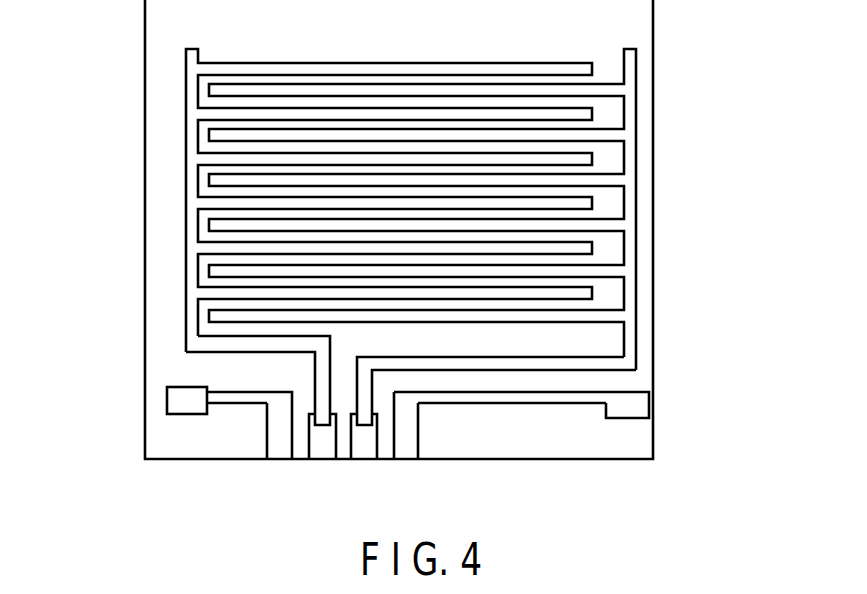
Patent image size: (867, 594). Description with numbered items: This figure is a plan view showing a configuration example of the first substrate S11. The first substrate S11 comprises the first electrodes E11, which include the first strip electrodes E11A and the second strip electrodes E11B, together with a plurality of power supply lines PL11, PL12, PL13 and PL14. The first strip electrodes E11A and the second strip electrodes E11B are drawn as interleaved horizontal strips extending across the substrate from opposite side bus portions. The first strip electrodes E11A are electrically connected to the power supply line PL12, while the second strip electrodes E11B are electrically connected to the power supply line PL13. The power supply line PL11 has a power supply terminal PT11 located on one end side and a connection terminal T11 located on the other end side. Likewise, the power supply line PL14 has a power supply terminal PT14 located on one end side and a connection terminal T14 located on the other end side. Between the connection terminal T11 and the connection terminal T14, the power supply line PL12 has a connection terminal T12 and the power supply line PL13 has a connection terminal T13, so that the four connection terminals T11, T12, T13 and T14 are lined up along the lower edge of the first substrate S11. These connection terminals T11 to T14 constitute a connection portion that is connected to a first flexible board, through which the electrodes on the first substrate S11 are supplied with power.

The first electrodes E11 is at (410, 209).
The first strip electrodes E11A is at (187, 69).
The second strip electrodes E11B is at (636, 90).
The power supply terminal PT11 is at (167, 398).
The power supply terminal PT14 is at (642, 403).
The power supply line PL11 is at (220, 399).
The power supply line PL12 is at (245, 345).
The power supply line PL13 is at (475, 363).
The power supply line PL14 is at (537, 398).
The connection terminal T11 is at (277, 455).
The connection terminal T12 is at (322, 456).
The connection terminal T13 is at (364, 455).
The connection terminal T14 is at (407, 456).
The first substrate S11 is at (627, 460).